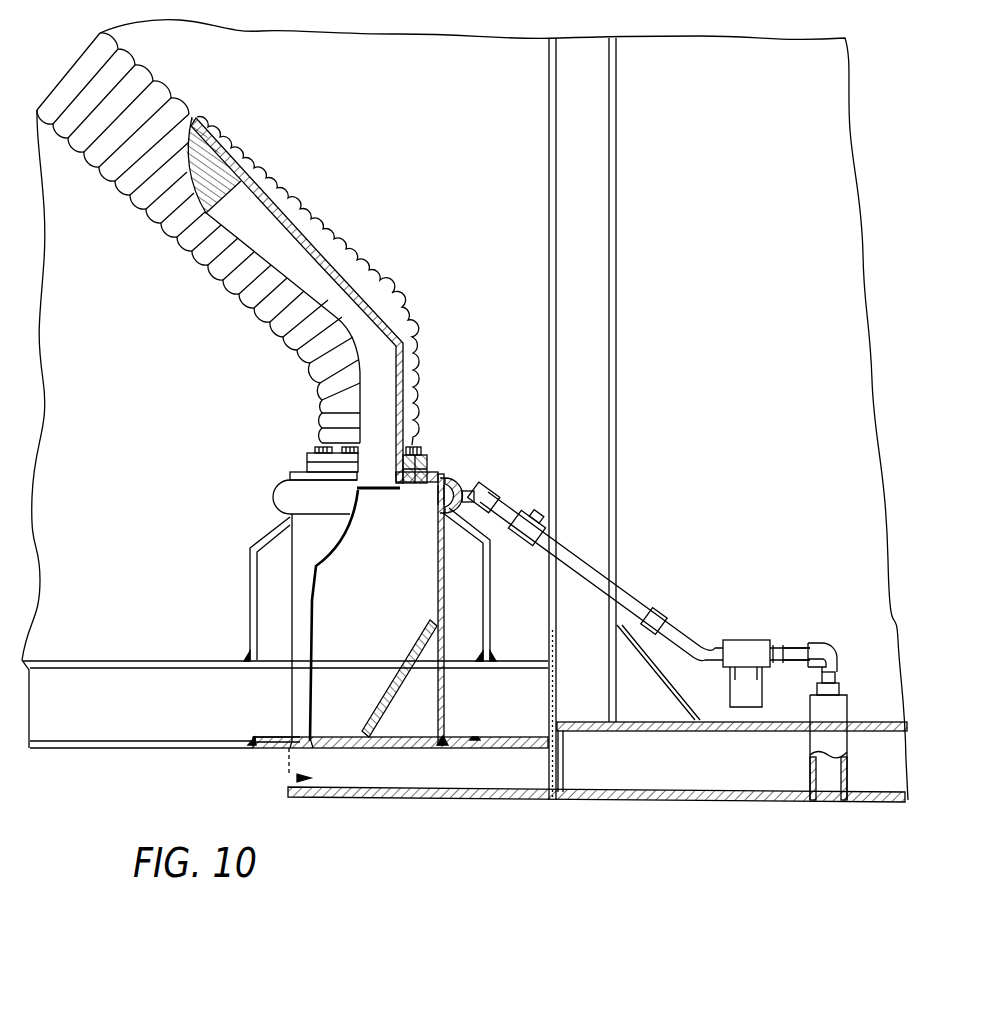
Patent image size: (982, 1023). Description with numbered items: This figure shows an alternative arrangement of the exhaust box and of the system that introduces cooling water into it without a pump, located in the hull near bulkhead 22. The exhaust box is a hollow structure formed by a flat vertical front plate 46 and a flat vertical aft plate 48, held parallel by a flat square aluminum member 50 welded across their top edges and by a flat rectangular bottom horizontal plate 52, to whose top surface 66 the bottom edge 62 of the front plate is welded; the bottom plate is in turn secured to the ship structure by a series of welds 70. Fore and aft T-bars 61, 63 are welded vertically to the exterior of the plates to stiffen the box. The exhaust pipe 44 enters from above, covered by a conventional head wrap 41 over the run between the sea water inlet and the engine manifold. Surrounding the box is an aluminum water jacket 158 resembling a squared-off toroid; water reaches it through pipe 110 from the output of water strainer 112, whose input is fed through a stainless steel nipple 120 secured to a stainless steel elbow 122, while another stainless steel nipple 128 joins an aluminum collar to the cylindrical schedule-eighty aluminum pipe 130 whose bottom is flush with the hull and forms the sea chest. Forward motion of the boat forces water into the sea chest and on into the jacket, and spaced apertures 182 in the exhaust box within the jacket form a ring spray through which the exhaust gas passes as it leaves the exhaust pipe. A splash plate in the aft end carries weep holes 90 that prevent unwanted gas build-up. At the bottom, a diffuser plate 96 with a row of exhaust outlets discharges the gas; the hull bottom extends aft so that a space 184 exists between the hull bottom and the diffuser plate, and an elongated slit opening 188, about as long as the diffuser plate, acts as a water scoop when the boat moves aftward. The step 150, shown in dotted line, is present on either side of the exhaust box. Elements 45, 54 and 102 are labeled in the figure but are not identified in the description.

The bulkhead 22 is at (552, 200).
The head wrap 41 is at (330, 233).
The exhaust pipe 44 is at (355, 292).
The flange 45 is at (403, 493).
The front plate 46 is at (437, 575).
The aft plate 48 is at (288, 603).
The square shaped aluminum member 50 is at (313, 457).
The bottom horizontal plate 52 is at (410, 730).
The bolt 54 is at (441, 474).
The fore T-bar 61 is at (473, 607).
The bottom edge of front plate 62 is at (448, 738).
The aft T-bar 63 is at (253, 577).
The top surface of bottom plate 66 is at (270, 736).
The welds 70 is at (248, 741).
The weep holes 90 is at (420, 652).
The diffuser plate 96 is at (316, 736).
The gasket 102 is at (220, 152).
The pipe 110 is at (493, 497).
The water strainer 112 is at (740, 693).
The stainless steel nipple 120 is at (793, 650).
The stainless steel elbow 122 is at (838, 647).
The stainless steel nipple 128 is at (837, 676).
The aluminum pipe 130 is at (848, 712).
The step 150 is at (287, 768).
The water jacket 158 is at (277, 487).
The apertures 182 is at (437, 493).
The space 184 is at (297, 780).
The slit opening 188 is at (492, 800).